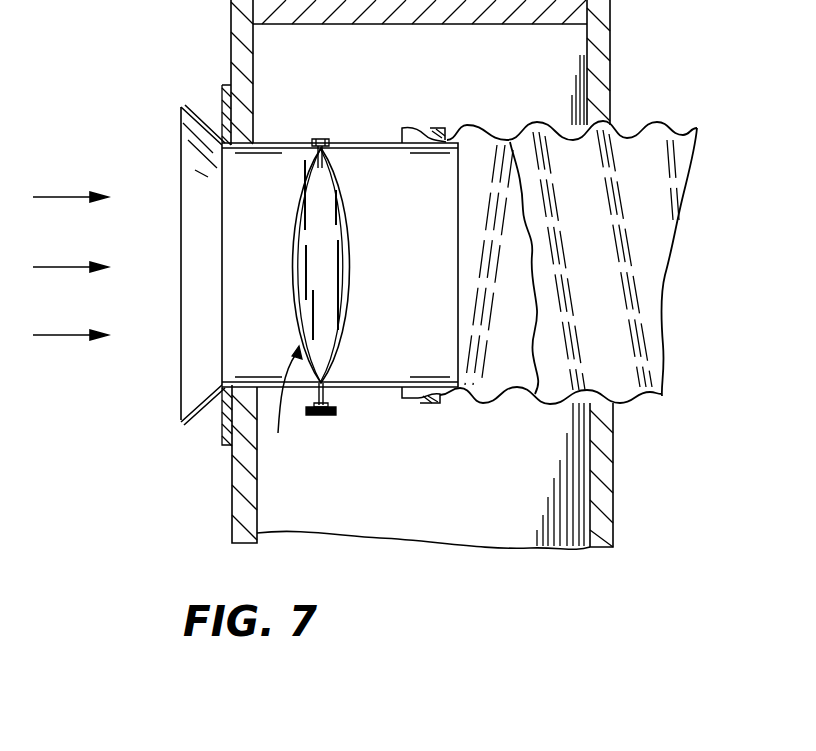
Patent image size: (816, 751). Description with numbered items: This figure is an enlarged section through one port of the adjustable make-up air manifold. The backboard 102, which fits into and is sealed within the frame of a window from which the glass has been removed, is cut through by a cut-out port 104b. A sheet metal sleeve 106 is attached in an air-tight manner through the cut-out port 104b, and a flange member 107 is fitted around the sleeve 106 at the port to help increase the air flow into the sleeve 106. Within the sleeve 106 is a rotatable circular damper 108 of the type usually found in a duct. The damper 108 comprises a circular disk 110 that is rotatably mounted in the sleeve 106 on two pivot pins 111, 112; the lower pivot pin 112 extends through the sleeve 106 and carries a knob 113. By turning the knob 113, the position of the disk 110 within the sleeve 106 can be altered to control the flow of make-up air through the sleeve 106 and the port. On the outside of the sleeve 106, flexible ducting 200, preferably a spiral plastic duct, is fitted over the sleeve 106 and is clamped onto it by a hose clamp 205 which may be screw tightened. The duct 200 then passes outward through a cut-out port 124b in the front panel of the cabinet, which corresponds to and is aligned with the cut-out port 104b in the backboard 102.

The backboard 102 is at (232, 48).
The cut-out port 104b is at (235, 150).
The sheet metal sleeve 106 is at (390, 390).
The flange member 107 is at (198, 424).
The rotatable circular damper 108 is at (298, 406).
The circular disk 110 is at (328, 269).
The pivot pin 111 is at (325, 150).
The lower pivot pin 112 is at (330, 381).
The knob 113 is at (336, 412).
The cut-out port 124b is at (612, 127).
The flexible ducting 200 is at (693, 110).
The hose clamp 205 is at (437, 398).